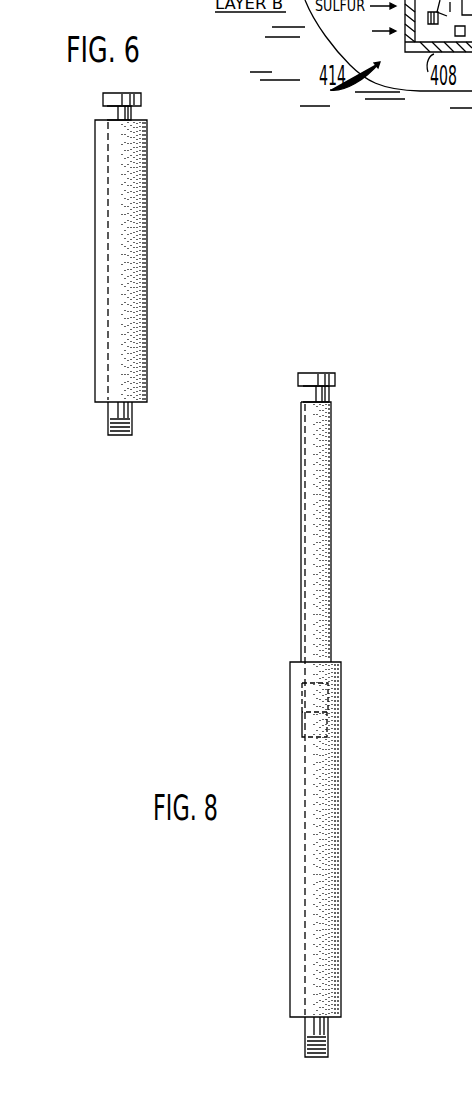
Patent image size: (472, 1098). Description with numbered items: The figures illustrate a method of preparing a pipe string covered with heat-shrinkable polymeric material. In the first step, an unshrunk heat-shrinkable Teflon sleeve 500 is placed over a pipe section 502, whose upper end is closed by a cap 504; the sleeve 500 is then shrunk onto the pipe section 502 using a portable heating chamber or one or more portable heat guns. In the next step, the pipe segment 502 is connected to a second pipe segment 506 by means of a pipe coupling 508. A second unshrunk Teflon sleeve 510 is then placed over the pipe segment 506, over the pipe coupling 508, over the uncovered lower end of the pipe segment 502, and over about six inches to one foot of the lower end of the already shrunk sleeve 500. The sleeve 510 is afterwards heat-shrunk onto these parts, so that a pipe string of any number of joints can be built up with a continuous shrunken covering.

In FIG. 6, the heat-shrinkable Teflon sleeve 500 is at (146, 253).
In FIG. 8, the heat-shrinkable Teflon sleeve 500 is at (331, 471).
In FIG. 6, the pipe section 502 is at (134, 412).
In FIG. 8, the pipe section 502 is at (333, 549).
In FIG. 6, the cap 504 is at (141, 97).
In FIG. 8, the cap 504 is at (336, 378).
In FIG. 8, the pipe segment 506 is at (330, 1028).
In FIG. 8, the pipe coupling 508 is at (327, 731).
In FIG. 8, the Teflon sleeve 510 is at (341, 863).